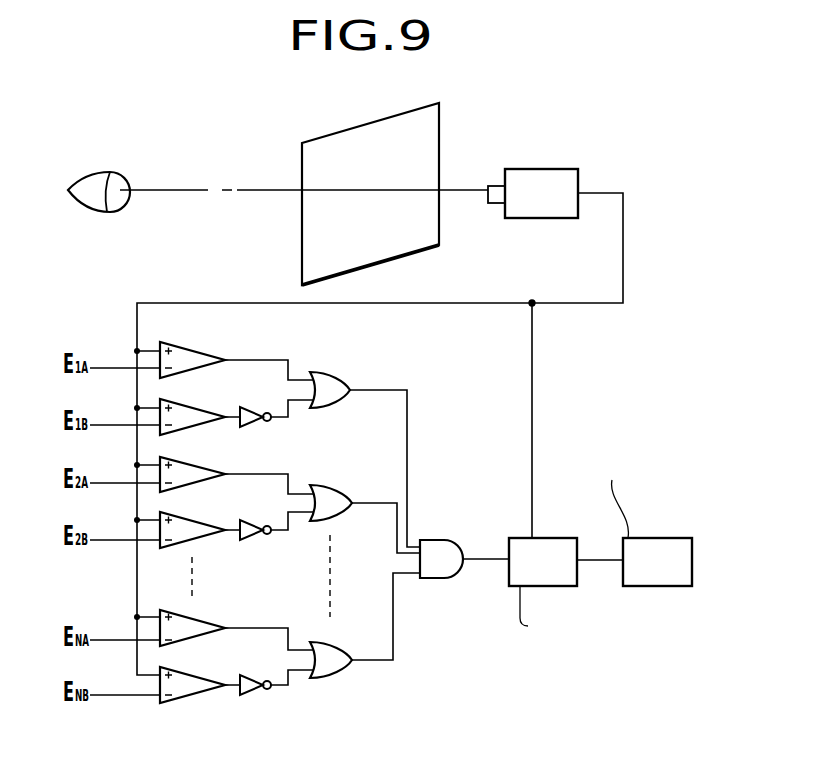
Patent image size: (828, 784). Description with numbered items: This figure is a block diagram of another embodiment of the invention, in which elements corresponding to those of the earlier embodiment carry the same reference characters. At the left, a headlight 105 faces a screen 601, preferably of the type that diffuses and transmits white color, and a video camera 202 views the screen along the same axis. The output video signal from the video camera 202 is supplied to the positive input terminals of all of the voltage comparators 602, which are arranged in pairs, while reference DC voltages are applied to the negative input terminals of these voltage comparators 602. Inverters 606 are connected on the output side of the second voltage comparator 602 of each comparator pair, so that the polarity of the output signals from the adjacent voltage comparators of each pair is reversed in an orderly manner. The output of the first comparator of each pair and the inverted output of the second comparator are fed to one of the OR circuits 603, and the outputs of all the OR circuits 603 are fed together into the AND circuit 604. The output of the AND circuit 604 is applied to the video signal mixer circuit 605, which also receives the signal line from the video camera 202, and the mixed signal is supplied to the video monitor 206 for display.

The headlight 105 is at (92, 180).
The screen 601 is at (353, 138).
The video camera 202 is at (535, 176).
The voltage comparators 602 is at (182, 354).
The inverters 606 is at (264, 422).
The OR circuits 603 is at (333, 380).
The AND circuit 604 is at (437, 548).
The video signal mixer circuit 605 is at (550, 548).
The video monitor 206 is at (656, 548).